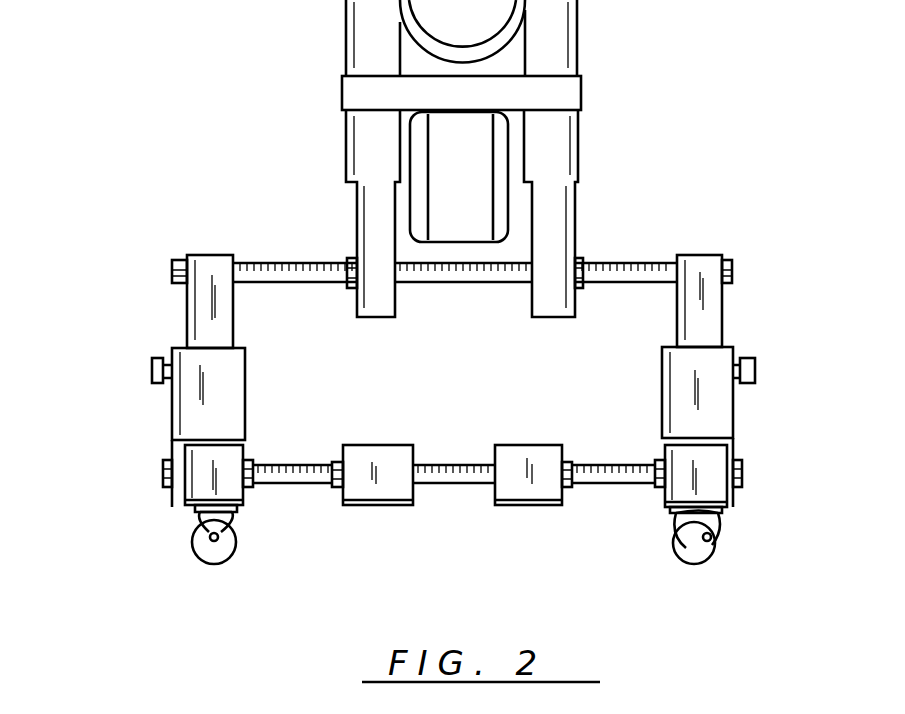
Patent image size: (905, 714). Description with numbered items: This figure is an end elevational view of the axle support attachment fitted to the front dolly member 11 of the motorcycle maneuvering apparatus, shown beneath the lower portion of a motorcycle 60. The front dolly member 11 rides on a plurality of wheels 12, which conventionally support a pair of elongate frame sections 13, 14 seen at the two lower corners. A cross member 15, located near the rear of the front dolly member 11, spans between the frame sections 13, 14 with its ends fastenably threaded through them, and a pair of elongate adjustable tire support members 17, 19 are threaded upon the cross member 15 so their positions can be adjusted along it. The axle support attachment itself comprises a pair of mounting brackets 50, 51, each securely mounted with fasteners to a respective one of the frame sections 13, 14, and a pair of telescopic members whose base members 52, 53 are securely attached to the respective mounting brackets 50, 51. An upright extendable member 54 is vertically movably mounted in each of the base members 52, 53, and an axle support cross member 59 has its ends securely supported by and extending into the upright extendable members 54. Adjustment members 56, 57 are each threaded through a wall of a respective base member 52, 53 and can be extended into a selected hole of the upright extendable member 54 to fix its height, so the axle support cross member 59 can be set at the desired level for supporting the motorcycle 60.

The front dolly member 11 is at (145, 478).
The wheels 12 is at (207, 558).
The elongate frame section 13 is at (233, 492).
The elongate frame section 14 is at (675, 487).
The cross member 15 is at (457, 465).
The elongate adjustable tire support member 17 is at (387, 490).
The elongate adjustable tire support member 19 is at (522, 495).
The mounting bracket 50 is at (745, 485).
The mounting bracket 51 is at (172, 490).
The base member 52 is at (733, 400).
The base member 53 is at (178, 415).
The upright extendable member 54 is at (203, 298).
The adjustment member 56 is at (757, 370).
The adjustment member 57 is at (153, 363).
The axle support cross member 59 is at (282, 262).
The motorcycle 60 is at (565, 150).